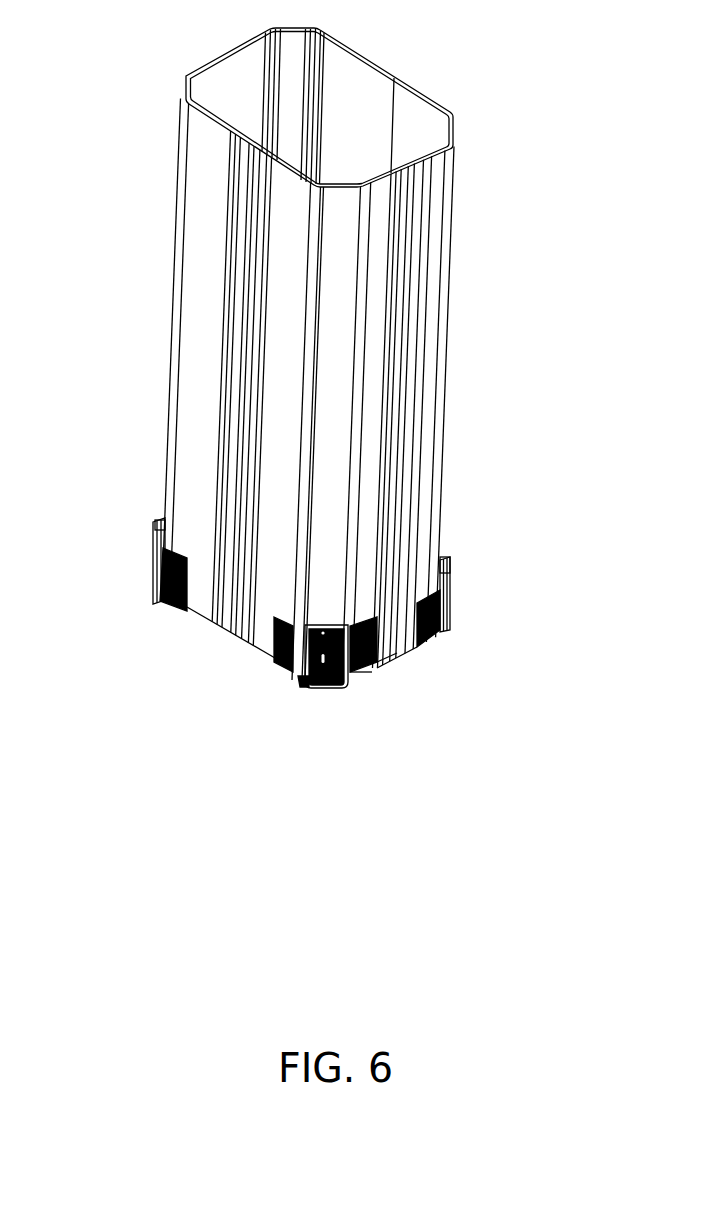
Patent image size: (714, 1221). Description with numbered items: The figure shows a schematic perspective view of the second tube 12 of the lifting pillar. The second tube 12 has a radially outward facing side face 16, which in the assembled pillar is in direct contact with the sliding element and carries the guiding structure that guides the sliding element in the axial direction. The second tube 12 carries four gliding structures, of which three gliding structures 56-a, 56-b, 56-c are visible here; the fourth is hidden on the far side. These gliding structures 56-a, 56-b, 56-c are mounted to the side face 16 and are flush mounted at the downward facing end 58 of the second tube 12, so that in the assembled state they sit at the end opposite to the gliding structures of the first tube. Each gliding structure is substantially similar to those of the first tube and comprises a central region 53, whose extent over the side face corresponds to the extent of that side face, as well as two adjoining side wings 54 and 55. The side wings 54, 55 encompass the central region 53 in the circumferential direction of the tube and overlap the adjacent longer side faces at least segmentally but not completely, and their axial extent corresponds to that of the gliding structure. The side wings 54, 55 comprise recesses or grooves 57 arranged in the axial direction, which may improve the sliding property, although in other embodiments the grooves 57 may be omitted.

The second tube 12 is at (361, 344).
The side face 16 is at (391, 72).
The central region 53 is at (318, 690).
The side wing 54 is at (370, 673).
The side wing 55 is at (273, 658).
The gliding structure 56-a is at (393, 700).
The gliding structure 56-b is at (448, 610).
The gliding structure 56-c is at (151, 587).
The grooves 57 is at (385, 662).
The downward facing end 58 is at (397, 653).